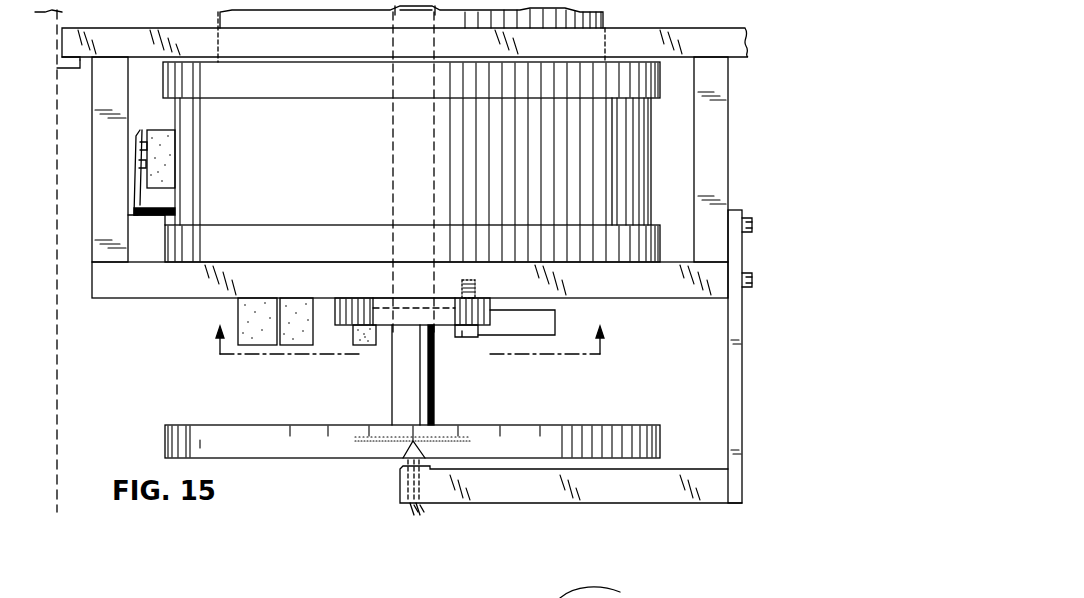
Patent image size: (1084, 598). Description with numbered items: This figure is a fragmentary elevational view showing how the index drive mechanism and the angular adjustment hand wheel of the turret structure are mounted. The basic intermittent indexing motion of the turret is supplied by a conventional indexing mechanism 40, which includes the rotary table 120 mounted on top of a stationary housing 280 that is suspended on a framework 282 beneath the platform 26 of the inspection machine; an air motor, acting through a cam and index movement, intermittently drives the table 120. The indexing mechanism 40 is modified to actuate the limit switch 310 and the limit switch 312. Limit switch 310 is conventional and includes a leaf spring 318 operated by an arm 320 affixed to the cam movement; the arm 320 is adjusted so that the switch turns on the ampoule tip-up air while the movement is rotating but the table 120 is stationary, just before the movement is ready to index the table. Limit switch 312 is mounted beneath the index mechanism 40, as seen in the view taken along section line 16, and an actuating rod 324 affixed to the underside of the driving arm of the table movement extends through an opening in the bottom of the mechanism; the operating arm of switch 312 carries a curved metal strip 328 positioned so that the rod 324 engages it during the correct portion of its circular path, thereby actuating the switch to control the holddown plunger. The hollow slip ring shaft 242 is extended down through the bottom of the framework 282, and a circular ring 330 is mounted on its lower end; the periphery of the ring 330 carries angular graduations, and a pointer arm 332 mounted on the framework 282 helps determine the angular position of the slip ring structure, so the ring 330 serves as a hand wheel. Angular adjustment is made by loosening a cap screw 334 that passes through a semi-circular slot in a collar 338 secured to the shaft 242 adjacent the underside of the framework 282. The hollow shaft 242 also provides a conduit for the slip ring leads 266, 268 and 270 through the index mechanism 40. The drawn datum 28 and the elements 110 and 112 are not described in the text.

The section line 16- 16 is at (411, 332).
The platform 26 is at (712, 28).
The frame datum / support 28 is at (62, 70).
The indexing mechanism 40 is at (411, 162).
The cylinder inlet port 110 is at (218, 24).
The cylinder cap / manifold 112 is at (607, 18).
The rotary table 120 is at (298, 88).
The hollow slip ring shaft 242 is at (430, 160).
The slip ring lead 266 is at (410, 512).
The slip ring lead 268 is at (422, 512).
The slip ring lead 270 is at (426, 512).
The stationary housing 280 is at (617, 208).
The framework 282 is at (123, 292).
The limit switch 310 is at (160, 132).
The limit switch 312 is at (258, 346).
The leaf spring 318 is at (135, 183).
The arm 320 is at (166, 218).
The actuating rod 324 is at (430, 345).
The curved metal strip 328 is at (548, 322).
The circular ring 330 is at (245, 450).
The pointer arm 332 is at (497, 500).
The cap screw 334 is at (480, 338).
The collar 338 is at (355, 346).